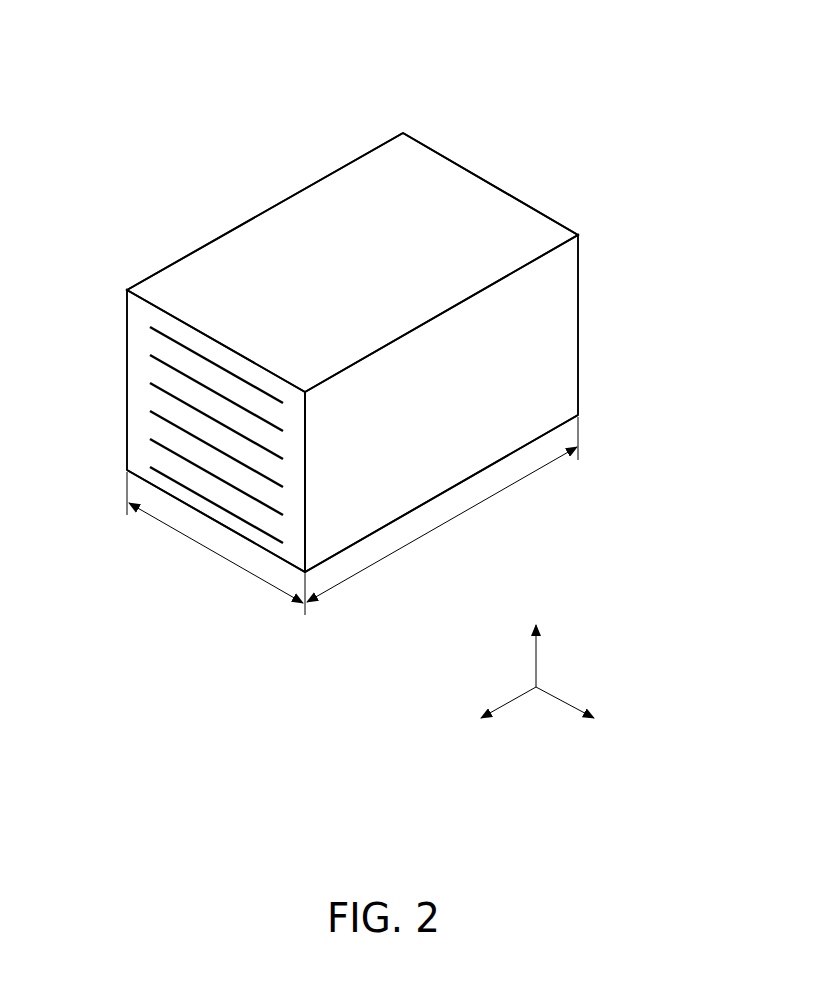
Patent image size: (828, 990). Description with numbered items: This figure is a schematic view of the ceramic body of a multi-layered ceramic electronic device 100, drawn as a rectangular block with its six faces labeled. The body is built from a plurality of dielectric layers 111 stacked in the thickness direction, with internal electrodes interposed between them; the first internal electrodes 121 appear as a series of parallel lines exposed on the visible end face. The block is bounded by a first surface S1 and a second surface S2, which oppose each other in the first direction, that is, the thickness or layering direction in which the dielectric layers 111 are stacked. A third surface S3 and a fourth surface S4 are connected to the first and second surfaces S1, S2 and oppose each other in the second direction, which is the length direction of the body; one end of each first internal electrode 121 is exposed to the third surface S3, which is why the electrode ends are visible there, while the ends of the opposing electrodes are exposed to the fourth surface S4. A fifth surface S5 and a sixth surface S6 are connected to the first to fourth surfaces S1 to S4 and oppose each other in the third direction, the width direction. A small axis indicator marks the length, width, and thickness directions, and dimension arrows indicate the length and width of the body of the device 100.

The multi-layered ceramic electronic device 100 is at (152, 31).
The first surface S1 is at (353, 199).
The second surface S2 is at (360, 514).
The third surface S3 is at (216, 491).
The fourth surface S4 is at (473, 211).
The fifth surface S5 is at (554, 340).
The sixth surface S6 is at (199, 282).
The dielectric layer 111 is at (153, 371).
The first internal electrode 121 is at (150, 327).